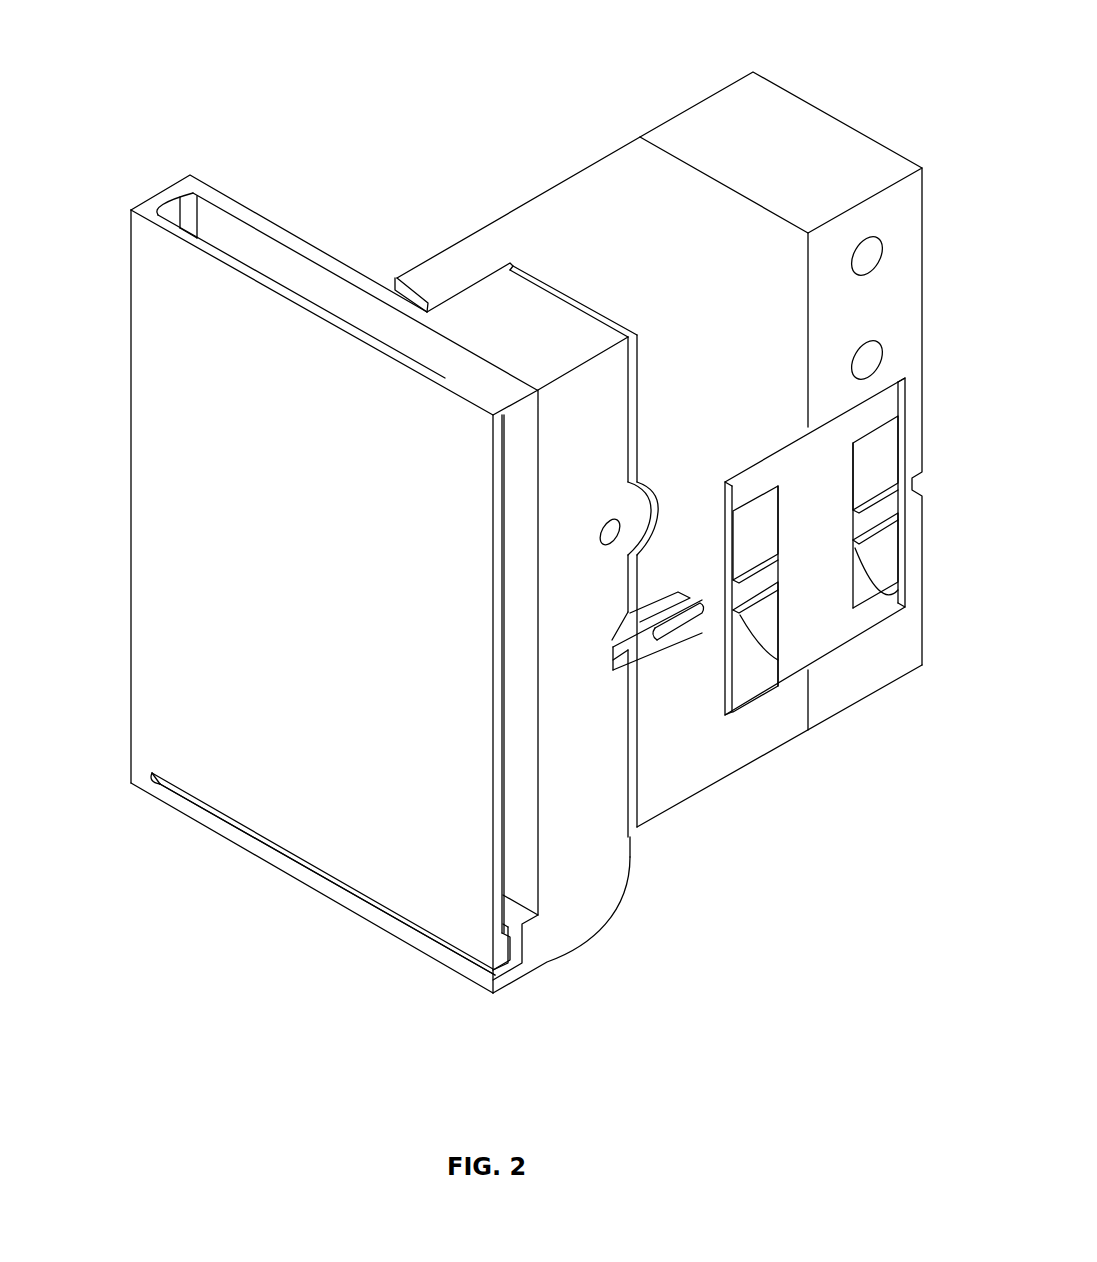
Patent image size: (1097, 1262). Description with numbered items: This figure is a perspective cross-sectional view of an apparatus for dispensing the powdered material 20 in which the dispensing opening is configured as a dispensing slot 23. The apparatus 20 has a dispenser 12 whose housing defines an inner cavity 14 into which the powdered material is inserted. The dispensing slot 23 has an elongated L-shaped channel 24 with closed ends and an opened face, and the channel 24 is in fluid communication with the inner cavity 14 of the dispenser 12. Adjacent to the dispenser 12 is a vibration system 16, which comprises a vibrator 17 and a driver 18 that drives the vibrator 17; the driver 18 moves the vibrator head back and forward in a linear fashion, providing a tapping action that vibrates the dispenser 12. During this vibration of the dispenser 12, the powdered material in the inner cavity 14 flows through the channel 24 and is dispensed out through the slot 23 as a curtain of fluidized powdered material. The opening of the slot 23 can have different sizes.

The dispenser 12 is at (181, 527).
The inner cavity 14 is at (514, 848).
The vibration system 16 is at (844, 686).
The vibrator 17 is at (681, 632).
The driver 18 is at (822, 676).
The apparatus for dispensing the powdered material 20 is at (820, 31).
The dispensing slot 23 is at (314, 903).
The channel 24 is at (183, 802).